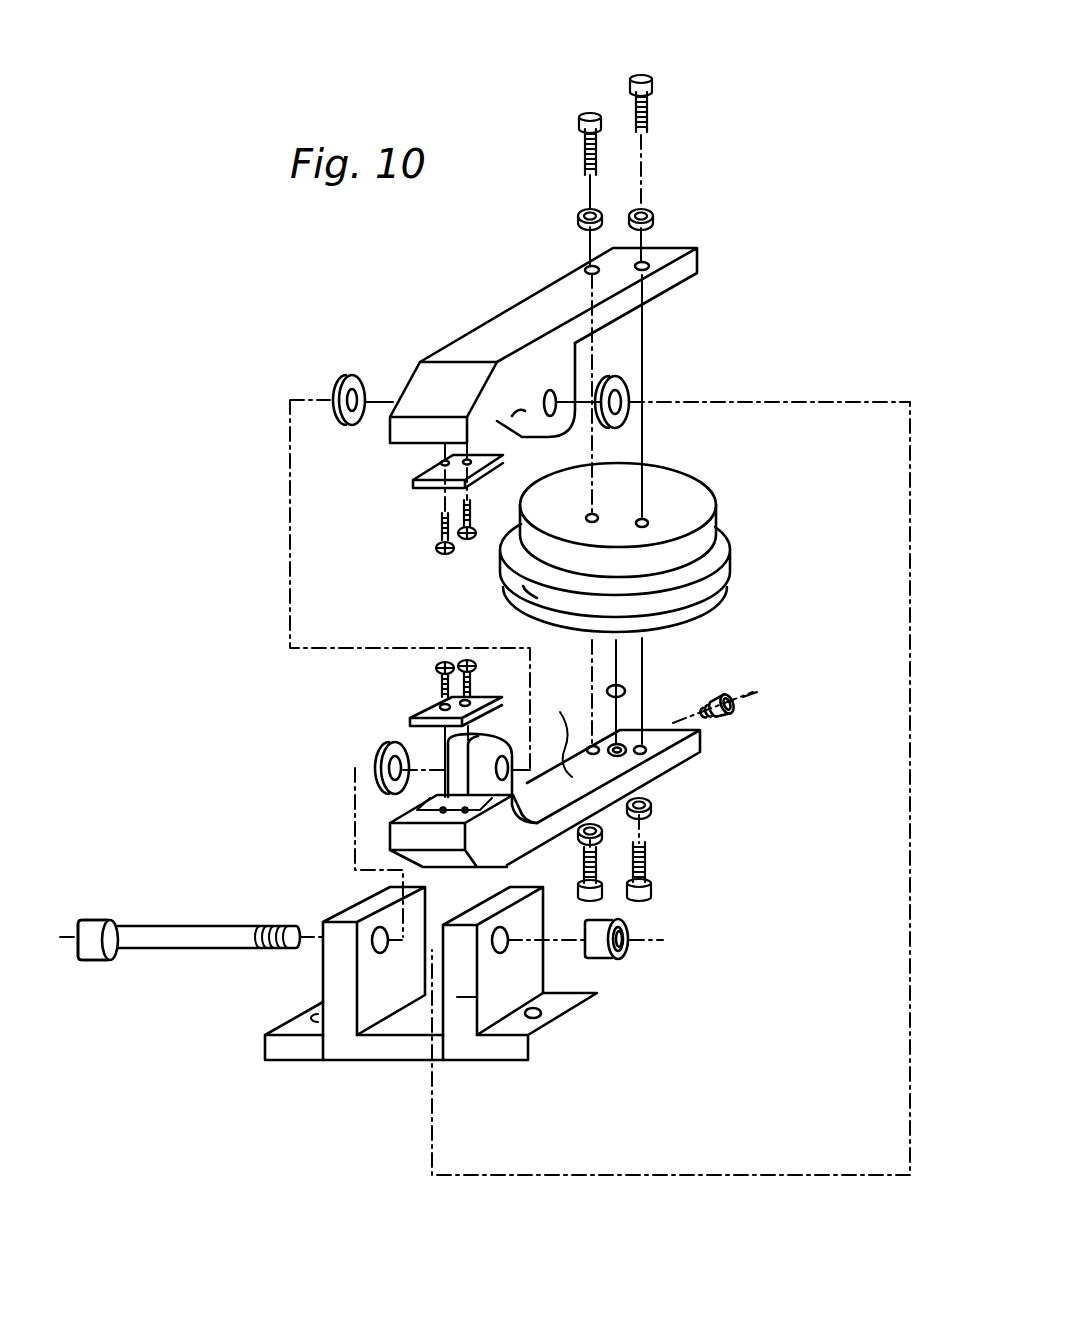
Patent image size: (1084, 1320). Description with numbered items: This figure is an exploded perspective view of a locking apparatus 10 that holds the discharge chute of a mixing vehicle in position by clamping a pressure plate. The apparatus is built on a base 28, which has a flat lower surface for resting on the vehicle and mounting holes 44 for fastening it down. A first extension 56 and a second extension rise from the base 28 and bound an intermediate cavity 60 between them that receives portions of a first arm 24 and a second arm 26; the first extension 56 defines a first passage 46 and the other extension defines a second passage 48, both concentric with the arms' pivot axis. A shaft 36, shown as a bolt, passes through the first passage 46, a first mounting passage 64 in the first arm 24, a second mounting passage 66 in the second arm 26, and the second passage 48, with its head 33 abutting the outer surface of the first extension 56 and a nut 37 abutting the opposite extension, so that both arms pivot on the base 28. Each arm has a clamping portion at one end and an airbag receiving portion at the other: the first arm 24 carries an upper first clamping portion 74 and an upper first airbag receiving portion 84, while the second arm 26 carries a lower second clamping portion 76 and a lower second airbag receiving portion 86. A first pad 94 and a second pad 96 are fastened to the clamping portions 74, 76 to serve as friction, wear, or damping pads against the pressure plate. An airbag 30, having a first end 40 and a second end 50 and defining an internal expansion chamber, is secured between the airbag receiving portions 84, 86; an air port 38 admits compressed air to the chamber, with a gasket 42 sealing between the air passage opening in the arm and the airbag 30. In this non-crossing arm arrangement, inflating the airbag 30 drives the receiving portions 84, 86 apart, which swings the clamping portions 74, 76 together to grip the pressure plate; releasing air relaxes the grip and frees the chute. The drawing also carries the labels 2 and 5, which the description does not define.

The locking apparatus 10 is at (249, 488).
The mechanism 2 is at (758, 795).
The base member 5 is at (458, 998).
The first arm 24 is at (702, 258).
The second arm 26 is at (702, 744).
The base 28 is at (360, 1050).
The airbag 30 is at (730, 548).
The head 33 is at (106, 925).
The shaft 36 is at (203, 928).
The nut 37 is at (608, 960).
The air port 38 is at (745, 712).
The first end 40 is at (665, 492).
The gasket 42 is at (628, 692).
The mounting holes 44 is at (553, 1008).
The first passage 46 is at (377, 938).
The second passage 48 is at (506, 946).
The second end 50 is at (658, 640).
The first extension 56 is at (332, 966).
The intermediate cavity 60 is at (437, 980).
The first mounting passage 64 is at (545, 390).
The second mounting passage 66 is at (507, 764).
The first clamping portion 74 is at (412, 446).
The second clamping portion 76 is at (432, 810).
The first airbag receiving portion 84 is at (625, 322).
The second airbag receiving portion 86 is at (560, 732).
The first pad 94 is at (425, 495).
The second pad 96 is at (430, 708).